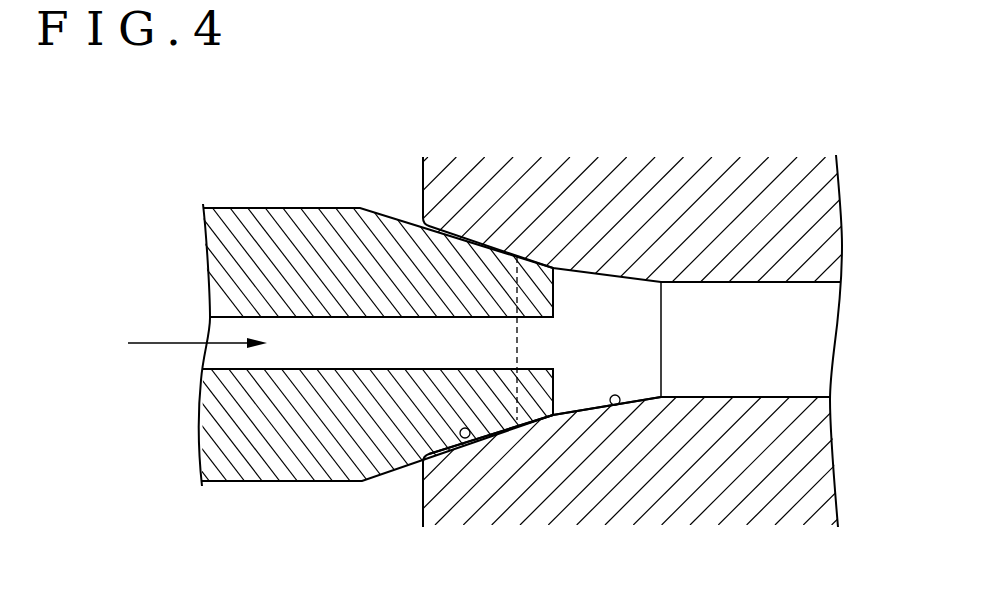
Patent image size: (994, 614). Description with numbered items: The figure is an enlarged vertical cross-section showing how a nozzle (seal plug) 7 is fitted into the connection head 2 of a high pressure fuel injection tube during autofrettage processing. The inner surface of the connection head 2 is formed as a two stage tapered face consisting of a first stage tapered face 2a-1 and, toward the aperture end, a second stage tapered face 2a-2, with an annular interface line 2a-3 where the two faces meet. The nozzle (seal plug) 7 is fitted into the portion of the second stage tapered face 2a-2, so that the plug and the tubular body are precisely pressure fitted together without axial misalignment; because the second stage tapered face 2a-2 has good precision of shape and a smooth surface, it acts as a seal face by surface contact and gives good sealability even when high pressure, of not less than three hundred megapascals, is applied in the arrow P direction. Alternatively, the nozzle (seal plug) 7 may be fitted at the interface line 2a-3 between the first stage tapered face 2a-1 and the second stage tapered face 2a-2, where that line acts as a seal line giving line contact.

The connection head 2 is at (631, 200).
The first stage tapered face 2a-1 is at (614, 405).
The second stage tapered face 2a-2 is at (467, 438).
The interface line (seal line) 2a-3 is at (517, 292).
The nozzle (seal plug) 7 is at (292, 465).
The arrow P direction P is at (155, 340).